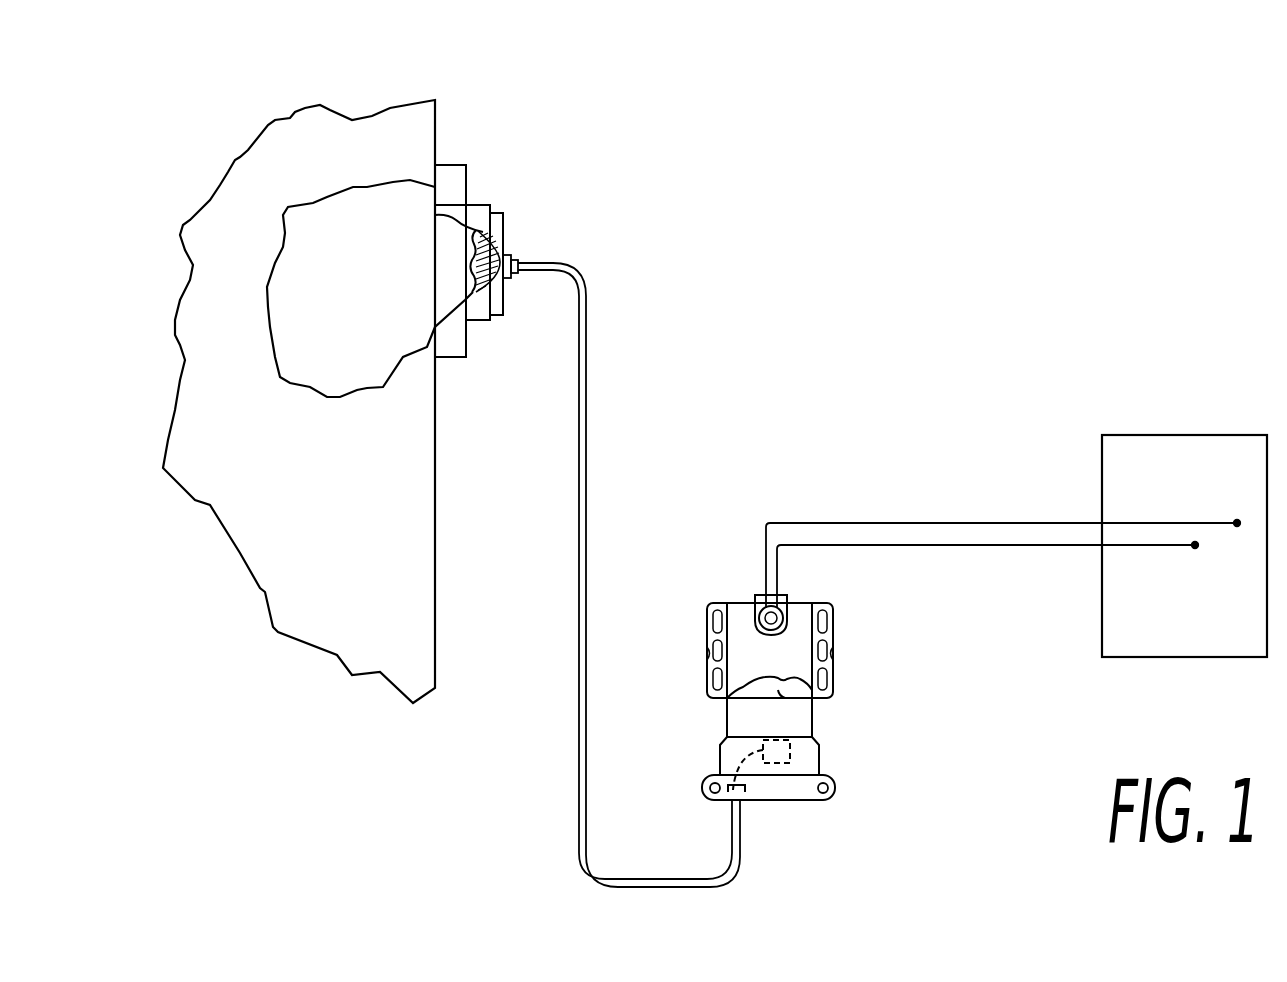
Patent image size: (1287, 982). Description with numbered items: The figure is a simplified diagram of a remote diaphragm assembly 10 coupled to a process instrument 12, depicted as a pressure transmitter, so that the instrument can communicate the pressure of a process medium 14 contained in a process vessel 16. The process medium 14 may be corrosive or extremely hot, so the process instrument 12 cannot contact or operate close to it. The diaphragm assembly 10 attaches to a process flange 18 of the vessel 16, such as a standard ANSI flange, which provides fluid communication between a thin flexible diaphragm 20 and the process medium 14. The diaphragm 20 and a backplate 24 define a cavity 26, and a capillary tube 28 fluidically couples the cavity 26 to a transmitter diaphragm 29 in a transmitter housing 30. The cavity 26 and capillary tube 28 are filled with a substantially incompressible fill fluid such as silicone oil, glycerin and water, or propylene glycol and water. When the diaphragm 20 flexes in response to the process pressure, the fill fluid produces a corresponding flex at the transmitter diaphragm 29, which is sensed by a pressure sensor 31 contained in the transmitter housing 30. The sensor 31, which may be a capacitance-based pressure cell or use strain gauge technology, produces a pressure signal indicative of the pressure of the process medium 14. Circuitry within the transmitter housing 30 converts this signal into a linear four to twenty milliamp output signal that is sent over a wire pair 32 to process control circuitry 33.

The remote diaphragm assembly 10 is at (495, 192).
The process instrument 12 is at (862, 797).
The process medium 14 is at (344, 325).
The process vessel 16 is at (436, 455).
The process flange 18 is at (465, 357).
The thin flexible diaphragm 20 is at (470, 265).
The backplate 24 is at (435, 215).
The cavity 26 is at (493, 216).
The capillary tube 28 is at (586, 318).
The transmitter diaphragm 29 is at (745, 800).
The transmitter housing 30 is at (805, 597).
The pressure sensor 31 is at (790, 752).
The wire pair 32 is at (943, 523).
The process control circuitry 33 is at (1173, 435).